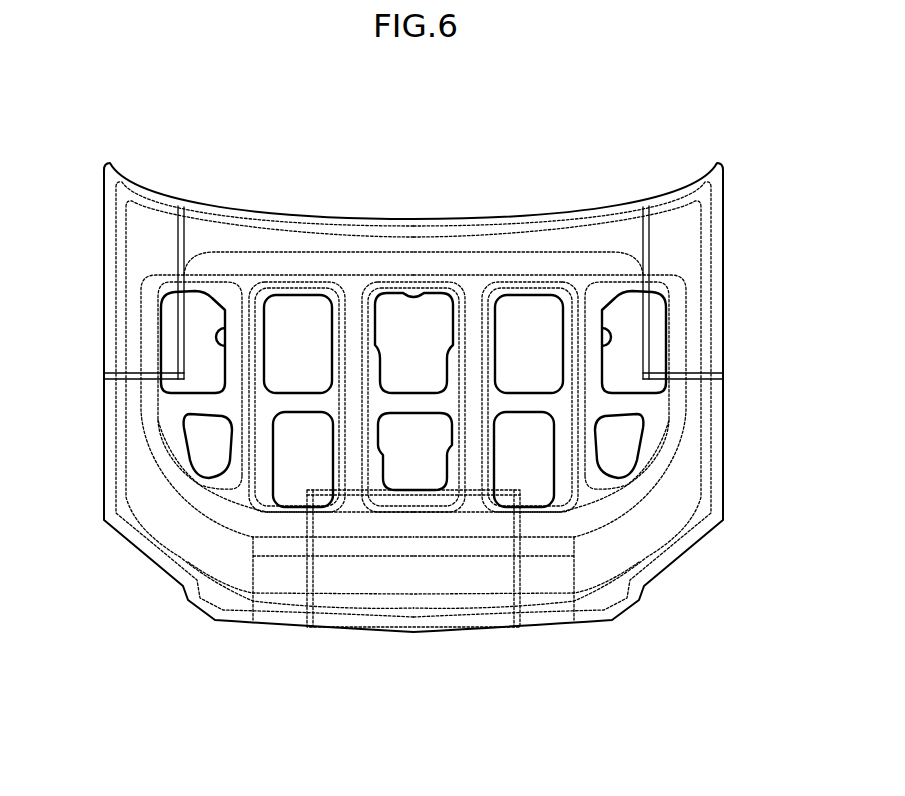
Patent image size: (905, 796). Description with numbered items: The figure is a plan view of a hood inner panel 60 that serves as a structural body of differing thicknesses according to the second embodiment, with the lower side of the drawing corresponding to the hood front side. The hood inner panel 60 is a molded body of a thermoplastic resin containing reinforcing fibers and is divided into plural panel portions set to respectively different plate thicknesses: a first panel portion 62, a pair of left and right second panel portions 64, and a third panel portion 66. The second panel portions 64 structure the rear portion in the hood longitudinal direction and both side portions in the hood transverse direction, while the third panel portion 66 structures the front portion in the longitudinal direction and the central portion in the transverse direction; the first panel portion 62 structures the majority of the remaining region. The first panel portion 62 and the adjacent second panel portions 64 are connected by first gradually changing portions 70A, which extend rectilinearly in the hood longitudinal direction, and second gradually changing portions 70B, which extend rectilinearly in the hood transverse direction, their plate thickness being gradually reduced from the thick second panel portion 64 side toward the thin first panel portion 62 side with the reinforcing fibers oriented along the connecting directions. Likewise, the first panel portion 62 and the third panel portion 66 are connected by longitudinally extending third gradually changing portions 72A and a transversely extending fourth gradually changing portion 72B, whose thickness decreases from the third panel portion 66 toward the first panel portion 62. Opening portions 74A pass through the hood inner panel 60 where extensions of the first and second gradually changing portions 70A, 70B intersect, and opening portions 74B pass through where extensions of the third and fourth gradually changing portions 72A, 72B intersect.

The hood inner panel 60 is at (572, 158).
The first panel portion 62 is at (428, 263).
The second panel portion 64 is at (133, 255).
The third panel portion 66 is at (420, 578).
The first gradually changing portion 70A is at (182, 240).
The second gradually changing portion 70B is at (137, 378).
The third gradually changing portion 72A is at (293, 574).
The fourth gradually changing portion 72B is at (412, 484).
The opening portion 74A is at (222, 343).
The opening portion 74B is at (330, 444).